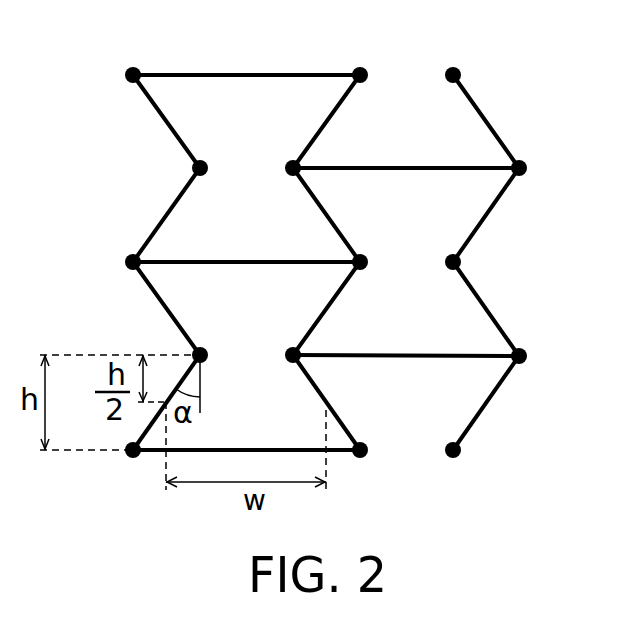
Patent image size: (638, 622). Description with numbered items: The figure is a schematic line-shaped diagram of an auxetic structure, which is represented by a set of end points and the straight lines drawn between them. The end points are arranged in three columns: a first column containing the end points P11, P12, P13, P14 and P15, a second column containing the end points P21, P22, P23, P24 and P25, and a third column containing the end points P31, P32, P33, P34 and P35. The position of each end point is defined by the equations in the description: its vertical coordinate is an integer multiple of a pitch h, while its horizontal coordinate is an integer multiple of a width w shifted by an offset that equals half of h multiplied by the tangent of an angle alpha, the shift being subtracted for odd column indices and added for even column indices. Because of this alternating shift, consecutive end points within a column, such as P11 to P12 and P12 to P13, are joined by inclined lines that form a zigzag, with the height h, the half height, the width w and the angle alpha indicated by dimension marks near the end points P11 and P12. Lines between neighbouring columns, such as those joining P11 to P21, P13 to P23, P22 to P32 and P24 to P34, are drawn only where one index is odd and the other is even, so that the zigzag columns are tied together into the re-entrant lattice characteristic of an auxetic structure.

The end point P11 is at (115, 480).
The end point P12 is at (203, 349).
The end point P13 is at (127, 256).
The end point P14 is at (203, 161).
The end point P15 is at (128, 69).
The end point P21 is at (376, 480).
The end point P22 is at (290, 349).
The end point P23 is at (363, 256).
The end point P24 is at (291, 161).
The end point P25 is at (353, 69).
The end point P31 is at (469, 480).
The end point P32 is at (528, 386).
The end point P33 is at (450, 256).
The end point P34 is at (529, 137).
The end point P35 is at (468, 45).